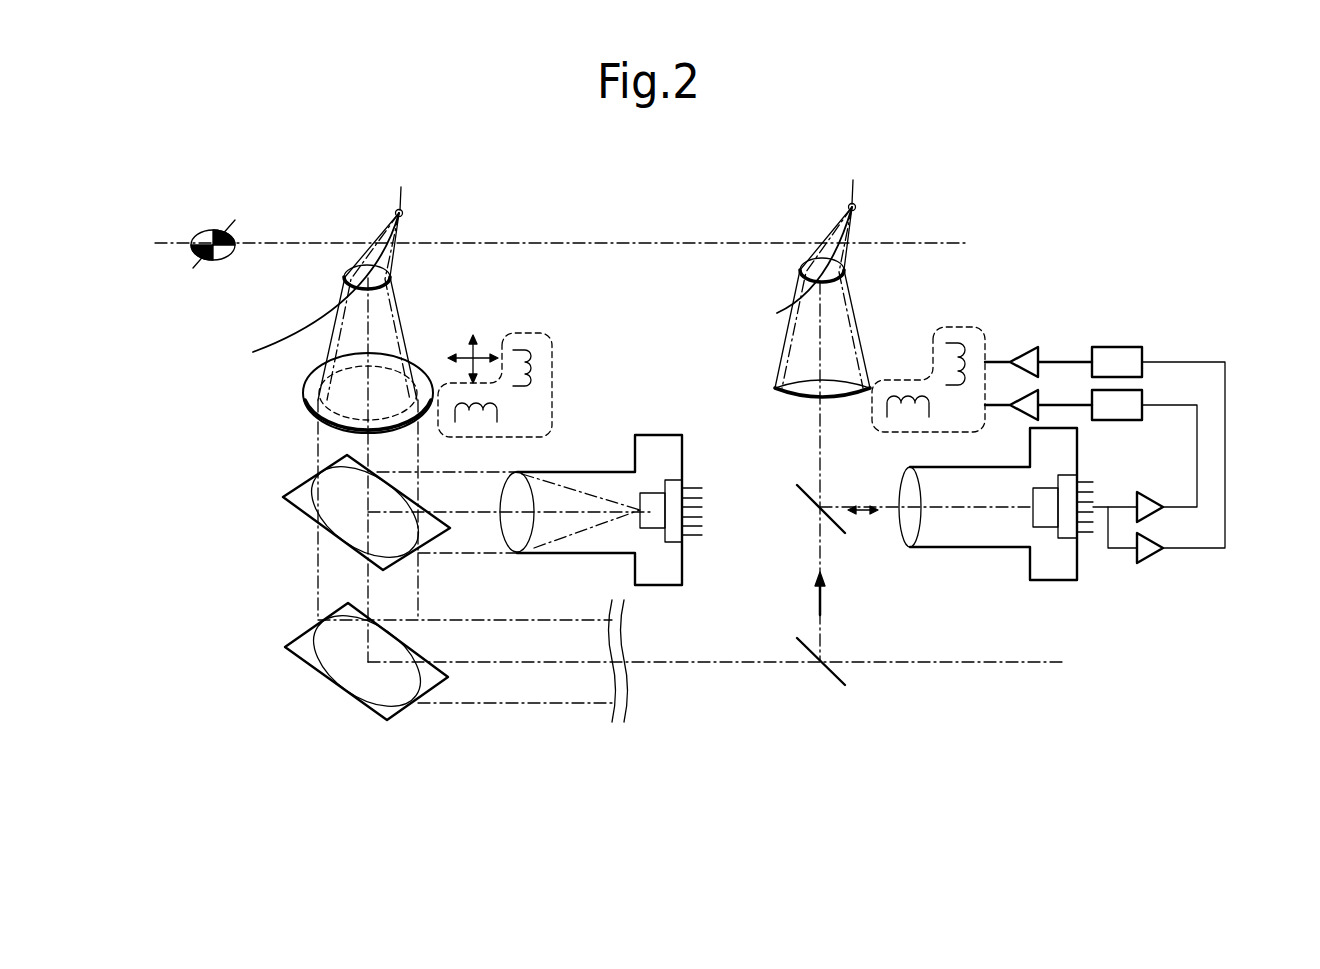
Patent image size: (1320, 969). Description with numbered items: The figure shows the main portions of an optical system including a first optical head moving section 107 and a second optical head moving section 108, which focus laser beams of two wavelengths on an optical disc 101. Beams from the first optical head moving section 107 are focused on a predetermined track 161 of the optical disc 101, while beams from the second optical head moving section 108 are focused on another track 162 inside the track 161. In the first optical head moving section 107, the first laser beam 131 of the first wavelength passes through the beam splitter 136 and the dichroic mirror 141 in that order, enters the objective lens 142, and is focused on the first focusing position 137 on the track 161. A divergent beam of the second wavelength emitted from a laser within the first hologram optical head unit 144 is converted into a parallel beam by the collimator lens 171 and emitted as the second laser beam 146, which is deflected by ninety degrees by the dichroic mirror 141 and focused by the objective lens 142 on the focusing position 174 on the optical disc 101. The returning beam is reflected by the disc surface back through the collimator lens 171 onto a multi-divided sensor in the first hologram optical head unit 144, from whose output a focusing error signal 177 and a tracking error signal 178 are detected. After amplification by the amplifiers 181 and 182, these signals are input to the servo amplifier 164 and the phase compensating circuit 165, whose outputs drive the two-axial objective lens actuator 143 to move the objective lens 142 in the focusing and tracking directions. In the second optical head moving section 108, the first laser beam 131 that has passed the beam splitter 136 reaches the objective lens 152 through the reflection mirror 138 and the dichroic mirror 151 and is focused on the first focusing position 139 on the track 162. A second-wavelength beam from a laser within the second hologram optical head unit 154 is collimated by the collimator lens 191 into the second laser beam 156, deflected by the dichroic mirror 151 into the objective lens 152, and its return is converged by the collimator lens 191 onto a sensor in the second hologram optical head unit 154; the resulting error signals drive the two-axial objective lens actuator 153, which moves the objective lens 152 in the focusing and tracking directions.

The optical disc 101 is at (265, 315).
The first optical head moving section 107 is at (1245, 370).
The second optical head moving section 108 is at (648, 373).
The first laser beam 131 is at (915, 663).
The beam splitter 136 is at (798, 647).
The first focusing position 137 is at (798, 275).
The reflection mirror 138 is at (318, 673).
The first focusing position 139 is at (343, 278).
The dichroic mirror 141 is at (815, 507).
The objective lens 142 is at (797, 400).
The two-axial objective lens actuator 143 is at (987, 330).
The first hologram optical head unit 144 is at (1048, 527).
The second laser beam 146 is at (833, 505).
The dichroic mirror 151 is at (307, 518).
The objective lens 152 is at (305, 403).
The two-axial objective lens actuator 153 is at (560, 377).
The second hologram optical head unit 154 is at (653, 530).
The second laser beam 156 is at (468, 560).
The track 161 is at (853, 183).
The track 162 is at (405, 197).
The servo amplifier 164 is at (403, 212).
The phase compensating circuit 165 is at (1115, 345).
The collimator lens 171 is at (903, 543).
The focusing position 174 is at (856, 207).
The focusing error signal 177 is at (1118, 505).
The tracking error signal 178 is at (1123, 552).
The amplifier 181 is at (1152, 562).
The amplifier 182 is at (1150, 490).
The collimator lens 191 is at (513, 553).